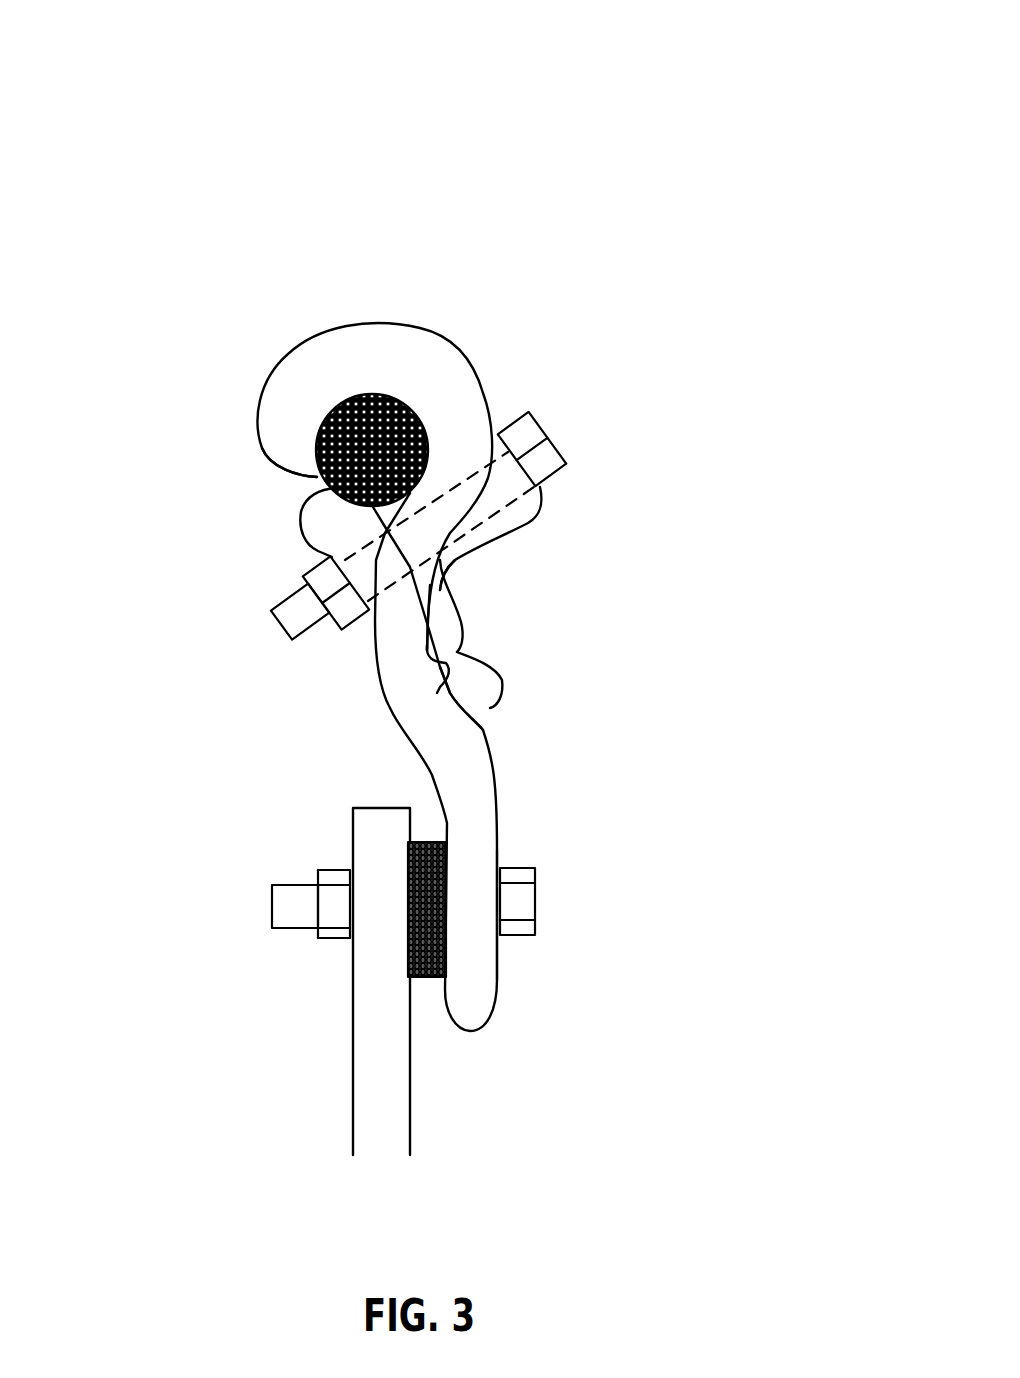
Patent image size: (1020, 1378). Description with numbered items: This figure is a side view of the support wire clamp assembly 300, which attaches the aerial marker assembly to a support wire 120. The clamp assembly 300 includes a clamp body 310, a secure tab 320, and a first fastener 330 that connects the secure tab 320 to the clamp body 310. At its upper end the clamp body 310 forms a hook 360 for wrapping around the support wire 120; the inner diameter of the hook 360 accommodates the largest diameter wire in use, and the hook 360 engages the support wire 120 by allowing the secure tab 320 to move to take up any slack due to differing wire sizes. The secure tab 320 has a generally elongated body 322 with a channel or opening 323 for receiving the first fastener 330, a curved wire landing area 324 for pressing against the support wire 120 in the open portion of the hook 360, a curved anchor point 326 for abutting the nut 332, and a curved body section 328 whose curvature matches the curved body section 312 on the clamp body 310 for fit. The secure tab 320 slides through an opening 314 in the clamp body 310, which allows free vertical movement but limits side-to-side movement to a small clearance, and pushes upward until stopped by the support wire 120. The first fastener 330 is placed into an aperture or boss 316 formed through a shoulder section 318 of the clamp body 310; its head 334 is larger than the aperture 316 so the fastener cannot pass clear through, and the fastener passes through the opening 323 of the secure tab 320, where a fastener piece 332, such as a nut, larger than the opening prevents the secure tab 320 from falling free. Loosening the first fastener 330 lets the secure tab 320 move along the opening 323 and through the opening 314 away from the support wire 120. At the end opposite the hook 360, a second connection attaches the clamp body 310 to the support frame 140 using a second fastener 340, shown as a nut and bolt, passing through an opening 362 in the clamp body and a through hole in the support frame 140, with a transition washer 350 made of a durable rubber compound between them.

The clamp assembly 300 is at (647, 145).
The support wire 120 is at (327, 487).
The support frame 140 is at (385, 1105).
The clamp body 310 is at (482, 778).
The curved body section 312 is at (437, 662).
The opening 314 is at (428, 627).
The aperture or boss 316 is at (507, 427).
The shoulder section 318 is at (517, 511).
The secure tab 320 is at (457, 652).
The elongated body 322 is at (490, 703).
The opening 323 is at (410, 553).
The curved wire landing area 324 is at (300, 513).
The curved anchor point 326 is at (283, 630).
The curved body section 328 is at (445, 682).
The first fastener 330 is at (567, 471).
The fastener piece 332 is at (303, 570).
The head 334 is at (553, 438).
The second fastener 340 is at (523, 900).
The transition washer 350 is at (425, 850).
The hook 360 is at (375, 365).
The opening 362 is at (506, 937).